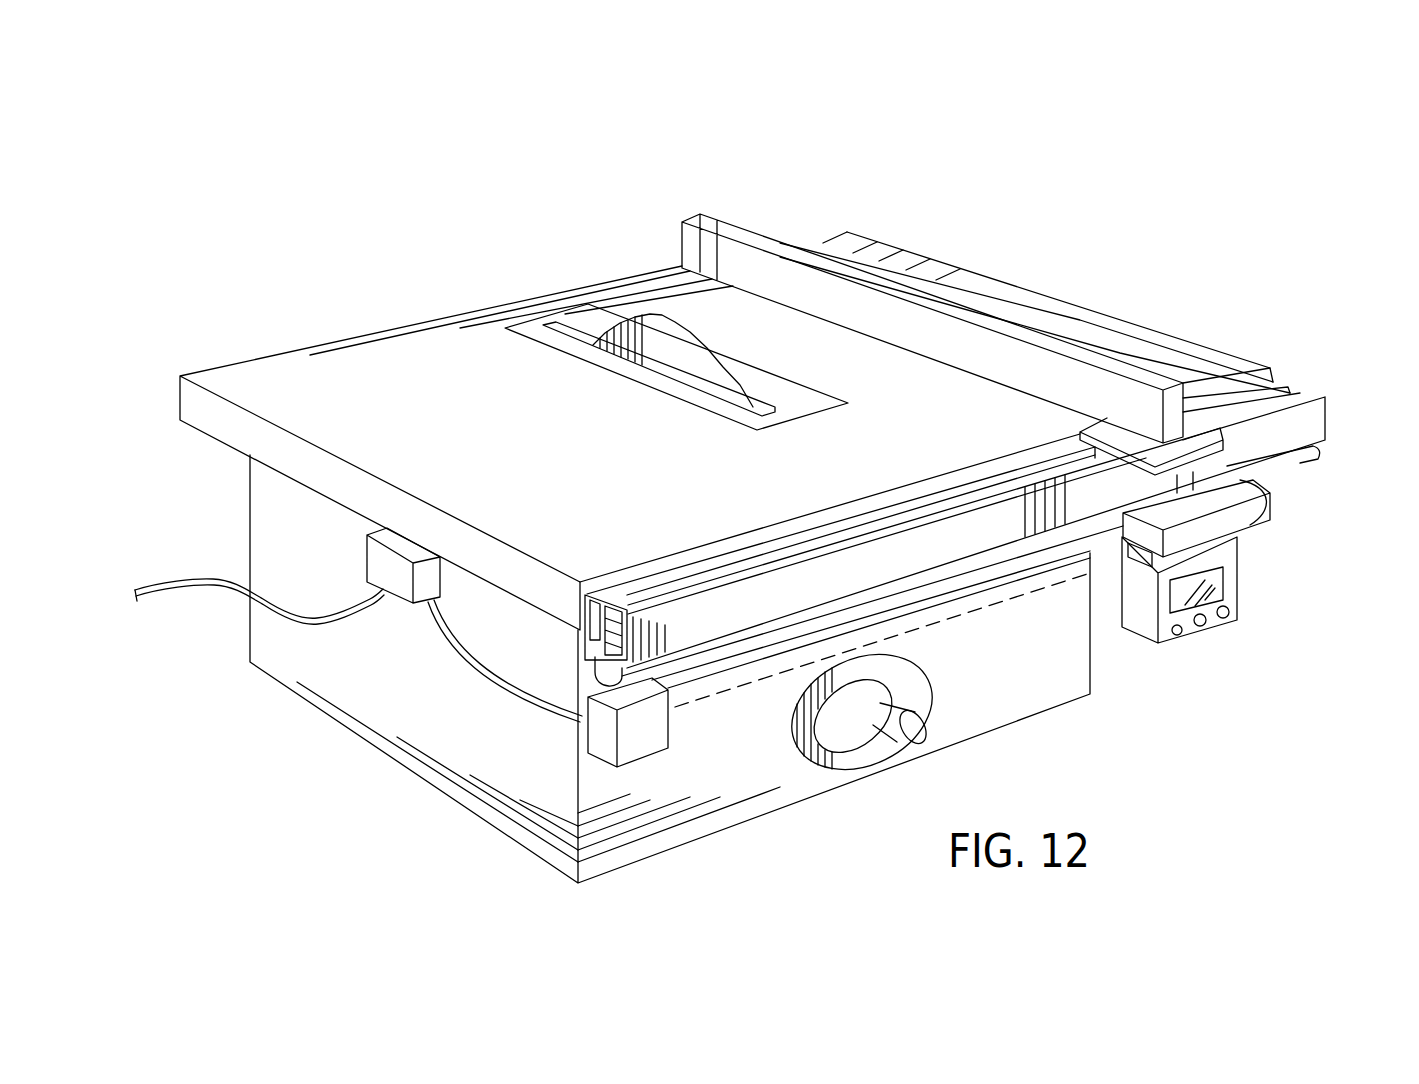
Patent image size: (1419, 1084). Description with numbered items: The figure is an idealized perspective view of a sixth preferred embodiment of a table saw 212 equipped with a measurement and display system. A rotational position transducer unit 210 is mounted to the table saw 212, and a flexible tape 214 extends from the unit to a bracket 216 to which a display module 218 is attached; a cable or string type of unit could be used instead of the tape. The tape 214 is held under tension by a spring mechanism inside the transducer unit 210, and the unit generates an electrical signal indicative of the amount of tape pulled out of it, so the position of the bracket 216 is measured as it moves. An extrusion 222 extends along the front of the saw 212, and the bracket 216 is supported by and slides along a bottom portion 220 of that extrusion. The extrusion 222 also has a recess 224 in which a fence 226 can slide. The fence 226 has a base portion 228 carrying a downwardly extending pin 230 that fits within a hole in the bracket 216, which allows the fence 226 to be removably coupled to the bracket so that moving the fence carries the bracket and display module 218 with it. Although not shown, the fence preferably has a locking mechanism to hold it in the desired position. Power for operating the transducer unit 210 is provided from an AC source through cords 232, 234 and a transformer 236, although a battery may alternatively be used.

The rotational position transducer unit 210 is at (643, 737).
The table saw 212 is at (767, 763).
The flexible tape 214 is at (987, 577).
The bracket 216 is at (1268, 484).
The display module 218 is at (1240, 582).
The bottom portion 220 is at (745, 637).
The extrusion 222 is at (1300, 425).
The recess 224 is at (632, 598).
The fence 226 is at (917, 328).
The base portion 228 is at (1100, 420).
The downwardly extending pin 230 is at (1253, 527).
The cord 232 is at (172, 597).
The cord 234 is at (467, 667).
The transformer 236 is at (383, 563).